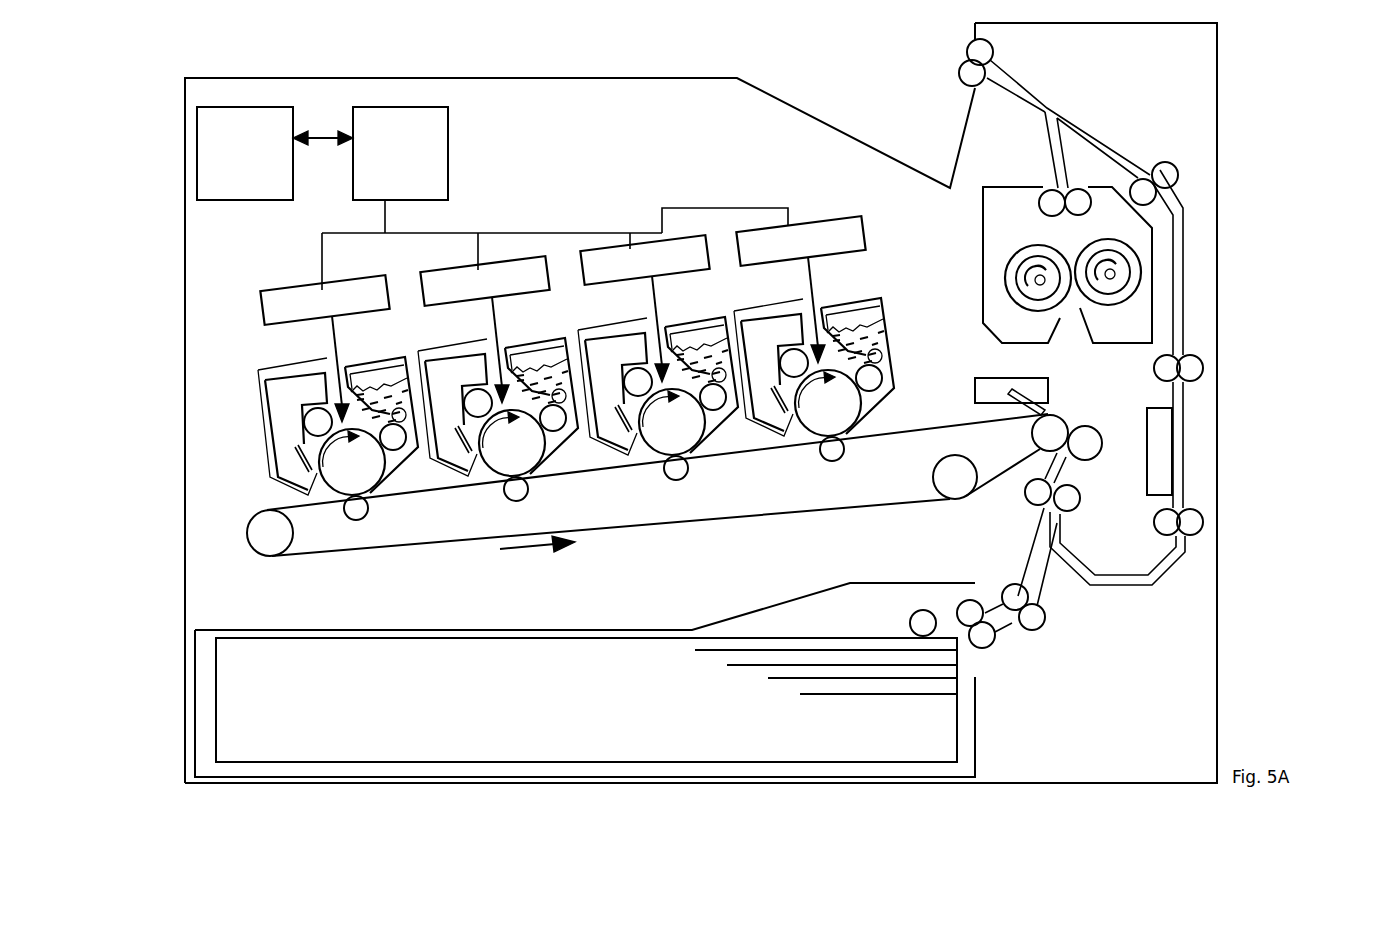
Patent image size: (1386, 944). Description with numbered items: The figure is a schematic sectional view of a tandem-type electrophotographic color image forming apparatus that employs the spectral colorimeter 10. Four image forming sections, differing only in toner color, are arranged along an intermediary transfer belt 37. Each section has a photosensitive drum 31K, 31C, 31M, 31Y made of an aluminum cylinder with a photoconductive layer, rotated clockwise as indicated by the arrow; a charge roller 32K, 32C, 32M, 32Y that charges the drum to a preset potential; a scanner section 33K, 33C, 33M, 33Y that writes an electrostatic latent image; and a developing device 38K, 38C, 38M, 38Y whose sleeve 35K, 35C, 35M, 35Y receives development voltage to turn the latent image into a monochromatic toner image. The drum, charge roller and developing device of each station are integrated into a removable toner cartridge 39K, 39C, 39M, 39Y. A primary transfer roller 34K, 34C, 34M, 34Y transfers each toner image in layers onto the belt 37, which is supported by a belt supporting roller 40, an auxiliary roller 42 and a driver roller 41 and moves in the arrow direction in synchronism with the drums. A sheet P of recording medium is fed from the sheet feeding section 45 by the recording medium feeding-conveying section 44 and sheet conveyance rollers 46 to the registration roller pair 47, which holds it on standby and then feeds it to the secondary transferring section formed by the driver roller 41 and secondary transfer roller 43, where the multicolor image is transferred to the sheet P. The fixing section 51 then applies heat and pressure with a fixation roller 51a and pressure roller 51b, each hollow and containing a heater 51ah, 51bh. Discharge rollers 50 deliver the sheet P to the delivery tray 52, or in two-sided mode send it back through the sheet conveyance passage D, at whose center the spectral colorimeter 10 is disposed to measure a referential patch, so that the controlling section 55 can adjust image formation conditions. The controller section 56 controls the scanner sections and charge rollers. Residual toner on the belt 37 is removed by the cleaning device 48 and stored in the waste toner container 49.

The spectral colorimeter 10 is at (1159, 451).
The photosensitive drum 31K is at (352, 462).
The photosensitive drum 31C is at (512, 443).
The photosensitive drum 31M is at (672, 422).
The photosensitive drum 31Y is at (828, 403).
The charge roller 32K is at (310, 389).
The charge roller 32C is at (469, 366).
The charge roller 32M is at (627, 347).
The charge roller 32Y is at (786, 328).
The scanner section 33K is at (324, 348).
The scanner section 33C is at (484, 329).
The scanner section 33M is at (644, 308).
The scanner section 33Y is at (800, 289).
The primary transfer roller 34K is at (379, 509).
The primary transfer roller 34C is at (543, 489).
The primary transfer roller 34M is at (702, 468).
The primary transfer roller 34Y is at (856, 449).
The sleeve 35K is at (413, 446).
The sleeve 35C is at (574, 427).
The sleeve 35M is at (734, 407).
The sleeve 35Y is at (892, 385).
The intermediary transfer belt 37 is at (377, 552).
The developing device 38K is at (381, 406).
The developing device 38C is at (541, 388).
The developing device 38M is at (701, 367).
The developing device 38Y is at (857, 348).
The toner cartridge 39K is at (280, 412).
The toner cartridge 39C is at (448, 391).
The toner cartridge 39M is at (605, 371).
The toner cartridge 39Y is at (764, 352).
The belt supporting roller 40 is at (280, 548).
The driver roller 41 is at (1053, 426).
The auxiliary roller 42 is at (952, 492).
The secondary transfer roller 43 is at (1090, 442).
The recording medium feeding-conveying section 44 is at (968, 742).
The sheet feeding section 45 is at (985, 642).
The sheet conveyance rollers 46 is at (1037, 619).
The registration roller pair 47 is at (1072, 500).
The cleaning device 48 is at (1047, 410).
The waste toner container 49 is at (1000, 383).
The discharge rollers 50 is at (977, 83).
The fixing section 51 is at (1067, 241).
The fixation roller 51a is at (1038, 277).
The pressure roller 51b is at (1108, 269).
The heater 51ah is at (1032, 295).
The heater 51bh is at (1112, 290).
The delivery tray 52 is at (867, 146).
The controlling section 55 is at (245, 153).
The controller section 56 is at (400, 153).
The sheet conveyance passage for two-sided mode D is at (1105, 142).
The sheet of recording medium P is at (552, 672).